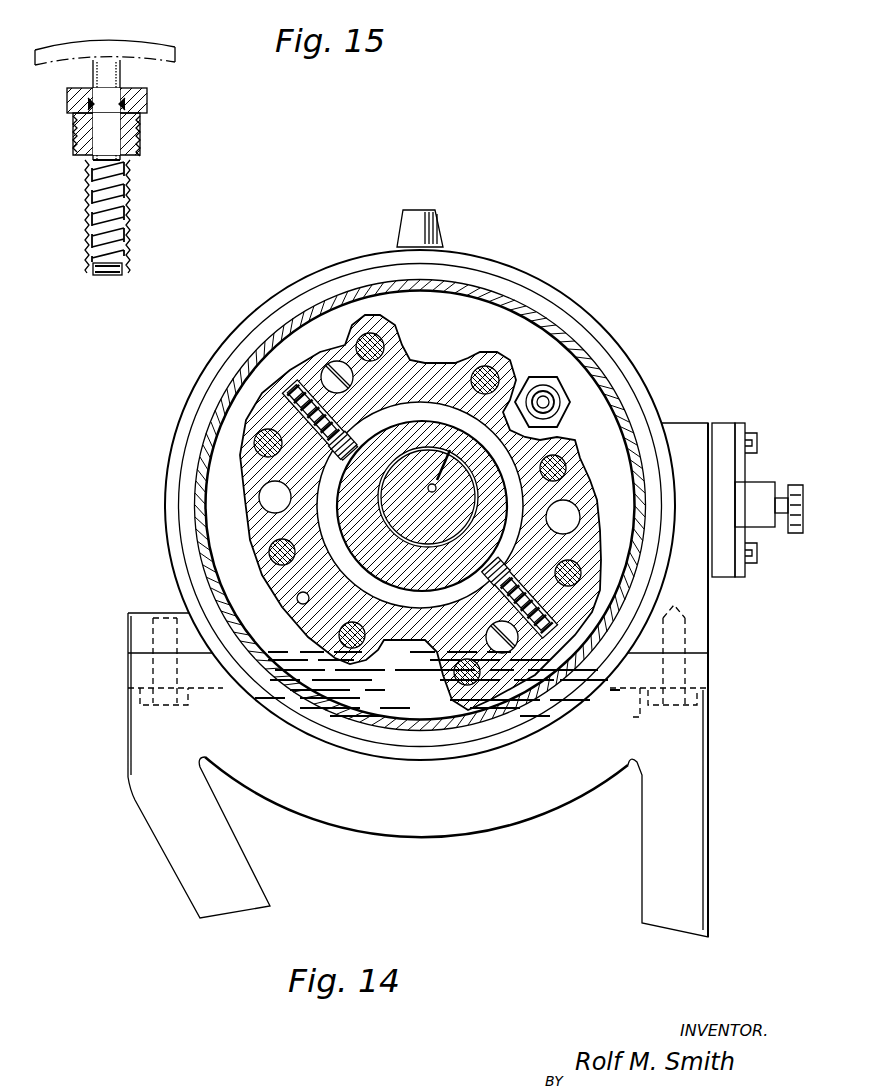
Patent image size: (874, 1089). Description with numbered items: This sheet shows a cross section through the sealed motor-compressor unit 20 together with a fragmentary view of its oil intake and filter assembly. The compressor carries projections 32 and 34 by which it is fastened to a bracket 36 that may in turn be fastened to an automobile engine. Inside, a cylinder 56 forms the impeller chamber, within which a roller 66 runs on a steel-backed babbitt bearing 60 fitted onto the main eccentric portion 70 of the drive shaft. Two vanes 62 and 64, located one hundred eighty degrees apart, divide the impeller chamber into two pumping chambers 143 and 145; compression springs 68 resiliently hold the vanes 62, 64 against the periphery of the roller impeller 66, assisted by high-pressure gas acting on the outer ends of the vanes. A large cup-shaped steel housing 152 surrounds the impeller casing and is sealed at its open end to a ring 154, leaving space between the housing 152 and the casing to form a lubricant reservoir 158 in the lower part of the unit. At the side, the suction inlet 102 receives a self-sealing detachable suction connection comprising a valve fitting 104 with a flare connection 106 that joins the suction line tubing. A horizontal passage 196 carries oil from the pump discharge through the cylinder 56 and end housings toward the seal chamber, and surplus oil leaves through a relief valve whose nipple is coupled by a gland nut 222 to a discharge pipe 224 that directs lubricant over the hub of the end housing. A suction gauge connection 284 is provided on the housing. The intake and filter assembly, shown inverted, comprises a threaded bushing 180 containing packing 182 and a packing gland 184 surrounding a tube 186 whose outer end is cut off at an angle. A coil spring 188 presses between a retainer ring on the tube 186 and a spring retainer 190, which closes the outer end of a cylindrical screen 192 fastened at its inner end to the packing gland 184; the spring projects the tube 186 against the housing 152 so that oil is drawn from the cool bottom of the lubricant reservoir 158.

In FIG. 14, the sealed motor-compressor unit 20 is at (543, 282).
In FIG. 14, the projection 32 is at (656, 680).
In FIG. 14, the projection 34 is at (140, 630).
In FIG. 14, the bracket 36 is at (250, 886).
In FIG. 14, the cylinder 56 is at (385, 333).
In FIG. 14, the steel-backed babbitt bearing 60 is at (458, 528).
In FIG. 14, the vane 62 is at (350, 428).
In FIG. 14, the vane 64 is at (495, 590).
In FIG. 14, the roller 66 is at (415, 580).
In FIG. 14, the compression spring 68 is at (300, 398).
In FIG. 14, the main eccentric portion 70 is at (428, 497).
In FIG. 14, the suction inlet 102 is at (680, 425).
In FIG. 14, the valve fitting 104 is at (735, 432).
In FIG. 14, the flare connection 106 is at (796, 486).
In FIG. 14, the pumping chamber 143 is at (420, 508).
In FIG. 14, the pumping chamber 145 is at (440, 349).
In FIG. 15, the cup-shaped steel housing member 152 is at (92, 40).
In FIG. 14, the ring 154 is at (167, 466).
In FIG. 14, the lubricant reservoir 158 is at (437, 684).
In FIG. 15, the threaded bushing 180 is at (150, 102).
In FIG. 15, the packing 182 is at (128, 100).
In FIG. 15, the packing gland 184 is at (128, 152).
In FIG. 15, the tube 186 is at (122, 72).
In FIG. 15, the coil spring 188 is at (124, 214).
In FIG. 15, the spring retainer 190 is at (110, 276).
In FIG. 15, the cylindrical screen 192 is at (125, 244).
In FIG. 14, the horizontal passage 196 is at (298, 603).
In FIG. 14, the gland nut 222 is at (548, 372).
In FIG. 14, the discharge pipe 224 is at (550, 408).
In FIG. 14, the suction gauge connection 284 is at (438, 222).